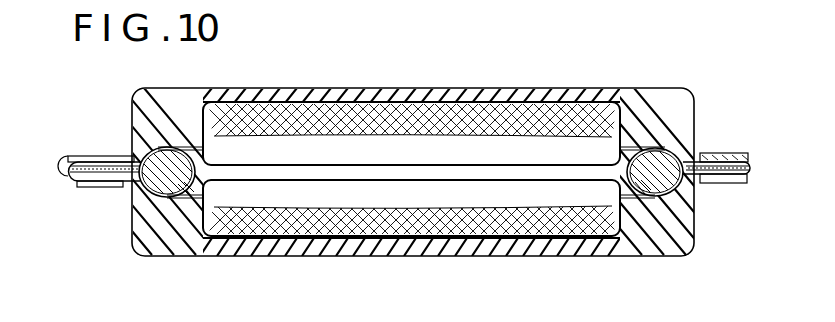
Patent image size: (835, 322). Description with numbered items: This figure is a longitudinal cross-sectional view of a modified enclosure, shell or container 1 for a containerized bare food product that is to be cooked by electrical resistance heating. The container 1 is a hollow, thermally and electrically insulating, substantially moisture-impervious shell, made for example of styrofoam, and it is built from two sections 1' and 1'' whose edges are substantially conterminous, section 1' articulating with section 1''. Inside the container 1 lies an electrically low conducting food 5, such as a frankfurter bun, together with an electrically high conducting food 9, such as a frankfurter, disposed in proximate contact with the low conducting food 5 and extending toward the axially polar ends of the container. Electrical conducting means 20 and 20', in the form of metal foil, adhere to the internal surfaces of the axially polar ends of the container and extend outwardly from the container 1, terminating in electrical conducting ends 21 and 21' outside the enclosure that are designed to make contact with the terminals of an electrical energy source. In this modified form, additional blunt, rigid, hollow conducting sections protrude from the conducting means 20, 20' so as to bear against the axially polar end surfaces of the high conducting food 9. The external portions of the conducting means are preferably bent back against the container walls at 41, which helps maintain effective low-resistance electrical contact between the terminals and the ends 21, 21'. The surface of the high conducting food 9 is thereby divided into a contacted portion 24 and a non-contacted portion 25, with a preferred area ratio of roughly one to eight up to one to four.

The container 1 is at (393, 204).
The container section 1' is at (410, 70).
The container section 1'' is at (410, 269).
The electrically low conducting food 5 is at (350, 227).
The electrically high conducting food 9 is at (267, 173).
The electrical conducting means 20 is at (105, 198).
The electrical conducting means 20' is at (691, 201).
The electrical conducting end 21 is at (48, 158).
The electrical conducting end 21' is at (752, 149).
The contacted high conducting food portion 24 is at (168, 167).
The non-contacted high conducting food portion 25 is at (412, 150).
The bent-back portion of electrical conducting means 41 is at (100, 157).